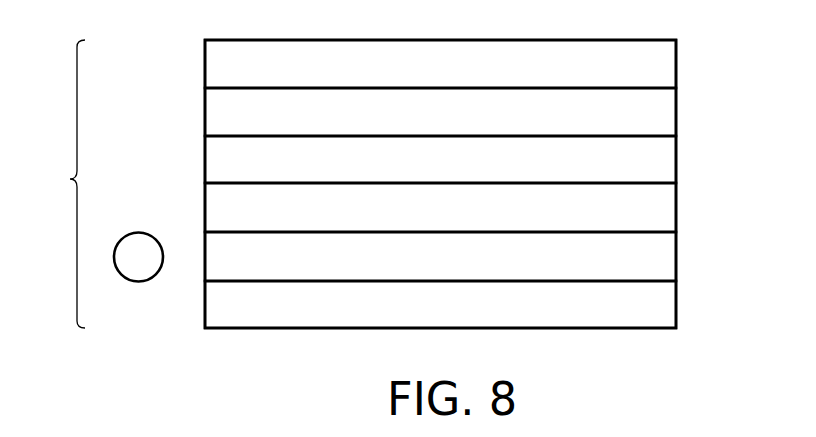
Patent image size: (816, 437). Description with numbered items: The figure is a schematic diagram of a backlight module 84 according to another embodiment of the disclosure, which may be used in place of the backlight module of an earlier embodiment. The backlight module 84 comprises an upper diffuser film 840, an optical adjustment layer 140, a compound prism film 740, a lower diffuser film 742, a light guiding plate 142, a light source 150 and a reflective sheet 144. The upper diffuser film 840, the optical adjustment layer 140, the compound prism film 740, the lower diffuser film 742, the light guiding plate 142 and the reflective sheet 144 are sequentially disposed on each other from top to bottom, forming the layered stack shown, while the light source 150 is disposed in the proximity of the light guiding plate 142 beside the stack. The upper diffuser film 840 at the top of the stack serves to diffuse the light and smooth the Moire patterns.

The backlight module 84 is at (70, 180).
The upper diffuser film 840 is at (676, 62).
The optical adjustment layer 140 is at (676, 110).
The compound prism film 740 is at (676, 157).
The lower diffuser film 742 is at (676, 205).
The light guiding plate 142 is at (676, 253).
The reflective sheet 144 is at (676, 301).
The light source 150 is at (137, 282).